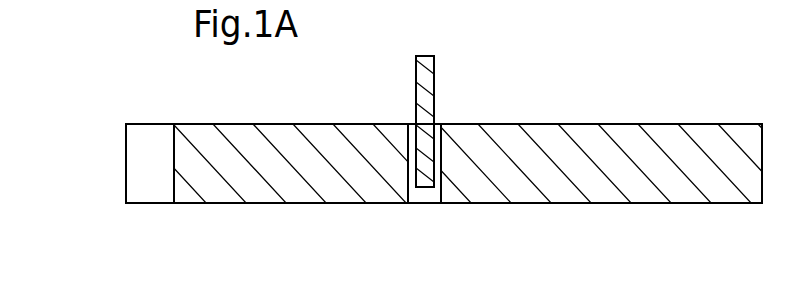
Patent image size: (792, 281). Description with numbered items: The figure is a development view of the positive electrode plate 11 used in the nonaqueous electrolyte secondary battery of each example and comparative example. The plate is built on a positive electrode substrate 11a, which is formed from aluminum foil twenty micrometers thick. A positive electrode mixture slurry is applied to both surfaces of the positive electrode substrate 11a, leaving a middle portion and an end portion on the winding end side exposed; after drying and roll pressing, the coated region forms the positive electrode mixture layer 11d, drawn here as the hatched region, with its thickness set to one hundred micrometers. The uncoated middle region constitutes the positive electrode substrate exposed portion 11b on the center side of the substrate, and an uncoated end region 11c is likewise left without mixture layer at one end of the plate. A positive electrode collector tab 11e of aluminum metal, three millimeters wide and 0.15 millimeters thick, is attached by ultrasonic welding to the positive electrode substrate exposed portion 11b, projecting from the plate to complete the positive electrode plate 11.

The positive electrode plate 11 is at (748, 93).
The positive electrode substrate 11a is at (323, 198).
The positive electrode substrate exposed portion 11b is at (442, 198).
The end portion 11c is at (152, 160).
The positive electrode mixture layer 11d is at (612, 198).
The positive electrode collector tab 11e is at (434, 74).